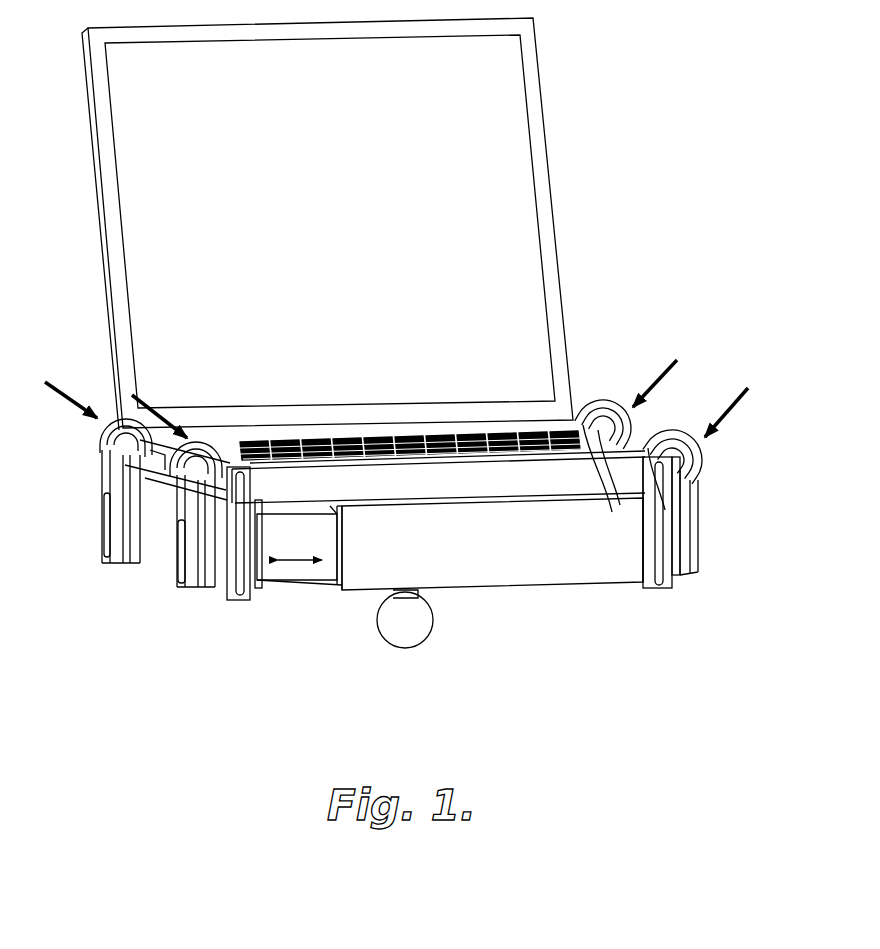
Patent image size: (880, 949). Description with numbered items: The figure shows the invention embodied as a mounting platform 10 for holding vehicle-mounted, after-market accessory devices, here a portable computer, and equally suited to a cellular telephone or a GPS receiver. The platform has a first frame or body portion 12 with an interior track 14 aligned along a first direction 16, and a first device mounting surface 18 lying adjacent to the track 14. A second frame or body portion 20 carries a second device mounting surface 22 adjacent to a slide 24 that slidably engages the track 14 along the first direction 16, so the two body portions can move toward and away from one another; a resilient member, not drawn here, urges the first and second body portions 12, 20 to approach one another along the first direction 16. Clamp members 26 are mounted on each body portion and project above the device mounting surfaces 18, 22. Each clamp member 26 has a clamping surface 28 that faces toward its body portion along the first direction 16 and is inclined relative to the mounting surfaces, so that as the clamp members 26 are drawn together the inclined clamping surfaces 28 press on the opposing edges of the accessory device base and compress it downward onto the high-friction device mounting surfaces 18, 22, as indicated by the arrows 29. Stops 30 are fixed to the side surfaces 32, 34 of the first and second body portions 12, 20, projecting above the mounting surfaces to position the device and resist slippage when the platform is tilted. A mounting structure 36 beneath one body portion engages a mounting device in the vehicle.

The mounting platform 10 is at (259, 712).
The first body portion 12 is at (548, 588).
The interior track 14 is at (320, 592).
The first direction 16 is at (292, 588).
The first device mounting surface 18 is at (532, 492).
The second body portion 20 is at (157, 573).
The second device mounting surface 22 is at (157, 468).
The slide 24 is at (269, 586).
The clamp member 26 is at (100, 478).
The clamping surface 28 is at (123, 460).
The arrows 29 is at (70, 392).
The stop 30 is at (250, 488).
The side surface 32 is at (612, 555).
The side surface 34 is at (300, 549).
The mounting structure 36 is at (433, 636).